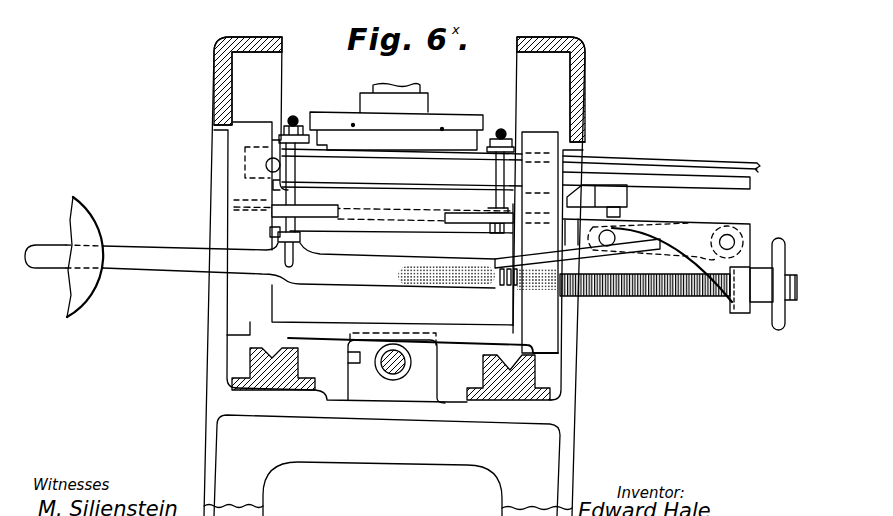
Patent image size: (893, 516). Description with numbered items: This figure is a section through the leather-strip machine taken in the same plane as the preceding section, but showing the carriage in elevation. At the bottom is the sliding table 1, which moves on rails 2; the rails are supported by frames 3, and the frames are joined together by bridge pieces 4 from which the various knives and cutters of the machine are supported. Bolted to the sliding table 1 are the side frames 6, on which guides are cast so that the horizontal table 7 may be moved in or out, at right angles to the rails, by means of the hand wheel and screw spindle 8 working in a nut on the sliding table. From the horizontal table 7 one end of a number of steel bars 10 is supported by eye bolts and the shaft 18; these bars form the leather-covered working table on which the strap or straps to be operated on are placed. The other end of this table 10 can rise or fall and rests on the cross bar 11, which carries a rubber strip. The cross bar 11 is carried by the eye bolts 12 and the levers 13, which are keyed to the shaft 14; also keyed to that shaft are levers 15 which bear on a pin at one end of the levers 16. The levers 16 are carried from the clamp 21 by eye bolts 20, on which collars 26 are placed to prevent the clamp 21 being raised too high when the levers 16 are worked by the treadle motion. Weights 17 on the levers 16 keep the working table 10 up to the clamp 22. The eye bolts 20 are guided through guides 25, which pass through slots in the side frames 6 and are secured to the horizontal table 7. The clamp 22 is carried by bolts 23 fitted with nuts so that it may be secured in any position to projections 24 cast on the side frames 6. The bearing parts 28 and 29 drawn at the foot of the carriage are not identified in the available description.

The sliding table 1 is at (436, 327).
The rails 2 is at (323, 369).
The frames 3 is at (388, 465).
The bridge pieces 4 is at (584, 71).
The side frames 6 is at (226, 311).
The horizontal table 7 is at (387, 208).
The hand wheel and screw spindle 8 is at (635, 297).
The steel bars 10 is at (700, 188).
The cross bar 11 is at (627, 208).
The eye bolts 12 is at (606, 213).
The levers 13 is at (641, 232).
The shaft 14 is at (734, 232).
The levers 15 is at (654, 251).
The levers 16 is at (163, 247).
The weights 17 is at (90, 209).
The shaft 18 is at (265, 164).
The eye bolts 20 is at (300, 248).
The clamp 21 is at (308, 133).
The clamp 22 is at (491, 136).
The bolts 23 is at (496, 183).
The projections 24 is at (463, 224).
The guides 25 is at (340, 218).
The collars 26 is at (283, 237).
The bearing bushing 28 is at (373, 370).
The bearing saddle 29 is at (423, 387).